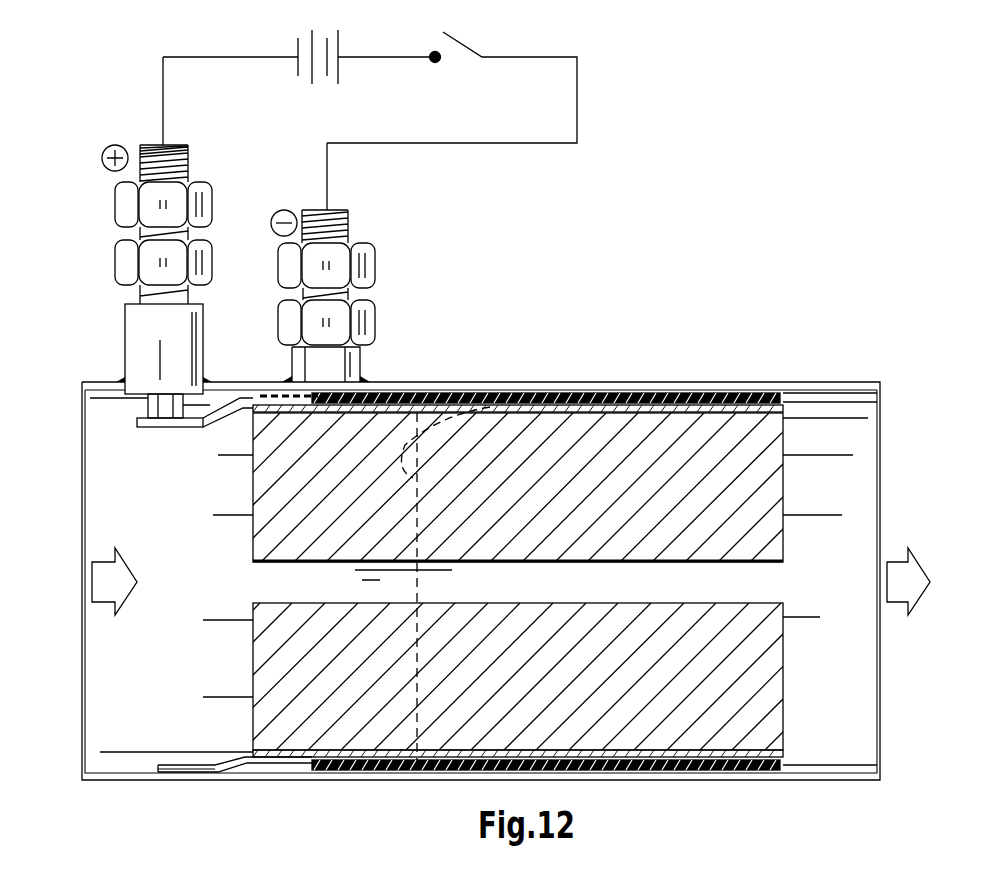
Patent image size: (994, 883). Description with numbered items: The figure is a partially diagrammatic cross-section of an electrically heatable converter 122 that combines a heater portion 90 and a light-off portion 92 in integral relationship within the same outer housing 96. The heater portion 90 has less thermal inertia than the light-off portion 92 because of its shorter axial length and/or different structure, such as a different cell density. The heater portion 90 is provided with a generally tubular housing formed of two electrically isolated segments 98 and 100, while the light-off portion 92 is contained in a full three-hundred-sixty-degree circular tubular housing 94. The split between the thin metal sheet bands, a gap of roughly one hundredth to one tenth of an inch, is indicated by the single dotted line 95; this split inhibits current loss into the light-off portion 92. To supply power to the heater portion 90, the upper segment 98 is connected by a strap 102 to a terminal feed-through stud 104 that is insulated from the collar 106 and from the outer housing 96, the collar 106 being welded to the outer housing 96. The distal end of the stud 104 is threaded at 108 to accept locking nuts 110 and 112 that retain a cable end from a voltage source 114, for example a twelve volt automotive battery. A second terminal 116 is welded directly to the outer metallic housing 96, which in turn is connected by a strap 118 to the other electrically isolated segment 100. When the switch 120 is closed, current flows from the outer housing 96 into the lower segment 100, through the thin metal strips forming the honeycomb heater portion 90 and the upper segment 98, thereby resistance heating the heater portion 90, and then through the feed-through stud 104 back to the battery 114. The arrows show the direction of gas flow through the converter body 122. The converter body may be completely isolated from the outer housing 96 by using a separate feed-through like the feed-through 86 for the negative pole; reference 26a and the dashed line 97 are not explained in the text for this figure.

The conduit section 26a is at (783, 432).
The feed-through 86 is at (226, 160).
The heater portion 90 is at (329, 708).
The light-off portion 92 is at (595, 710).
The circular tubular housing 94 is at (643, 392).
The dotted line 95 is at (505, 405).
The outer housing 96 is at (97, 385).
The center plane 97 is at (407, 412).
The segment 98 is at (278, 413).
The segment 100 is at (290, 760).
The strap 102 is at (167, 425).
The terminal feed-through stud 104 is at (168, 147).
The collar 106 is at (188, 357).
The threads 108 is at (187, 163).
The locking nut 110 is at (202, 257).
The locking nut 112 is at (202, 207).
The voltage source 114 is at (340, 72).
The second terminal 116 is at (380, 222).
The strap 118 is at (197, 772).
The switch 120 is at (457, 42).
The electrically heatable converter 122 is at (73, 718).